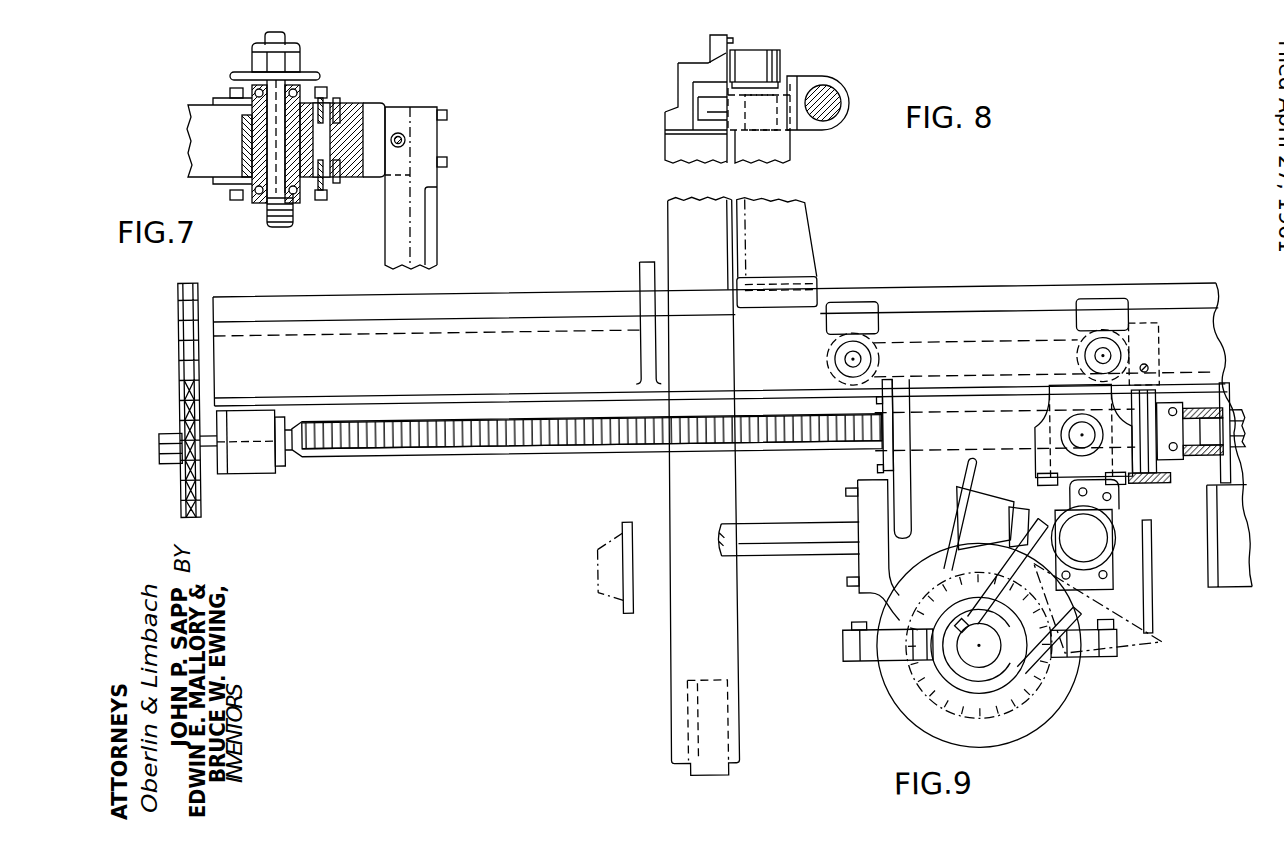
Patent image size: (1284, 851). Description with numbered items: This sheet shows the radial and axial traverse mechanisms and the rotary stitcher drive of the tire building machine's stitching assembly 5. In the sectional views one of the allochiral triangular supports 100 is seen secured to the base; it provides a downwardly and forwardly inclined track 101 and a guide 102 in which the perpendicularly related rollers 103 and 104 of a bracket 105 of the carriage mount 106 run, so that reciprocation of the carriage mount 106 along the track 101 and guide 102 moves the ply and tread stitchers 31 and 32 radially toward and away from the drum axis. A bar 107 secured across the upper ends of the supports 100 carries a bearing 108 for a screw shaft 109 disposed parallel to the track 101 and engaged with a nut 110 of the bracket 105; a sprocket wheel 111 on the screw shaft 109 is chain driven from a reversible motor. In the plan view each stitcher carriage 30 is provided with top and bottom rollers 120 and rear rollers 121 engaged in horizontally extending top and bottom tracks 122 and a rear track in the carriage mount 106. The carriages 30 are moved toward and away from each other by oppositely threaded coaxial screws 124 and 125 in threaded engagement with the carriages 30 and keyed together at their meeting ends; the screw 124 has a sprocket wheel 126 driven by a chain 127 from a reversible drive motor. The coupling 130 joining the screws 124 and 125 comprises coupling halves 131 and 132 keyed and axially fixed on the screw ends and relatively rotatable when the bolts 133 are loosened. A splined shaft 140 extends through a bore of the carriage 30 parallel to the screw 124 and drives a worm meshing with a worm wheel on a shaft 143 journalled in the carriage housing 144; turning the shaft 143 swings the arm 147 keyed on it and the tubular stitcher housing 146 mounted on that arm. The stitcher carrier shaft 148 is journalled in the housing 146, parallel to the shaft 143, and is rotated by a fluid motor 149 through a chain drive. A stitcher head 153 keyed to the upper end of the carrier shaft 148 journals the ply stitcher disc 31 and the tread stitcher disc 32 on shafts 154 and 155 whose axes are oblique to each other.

In FIG. 9, the carriage assembly 5 is at (1012, 283).
In FIG. 9, the stitcher carriage 30 is at (882, 505).
In FIG. 9, the ply stitcher disc 31 is at (975, 479).
In FIG. 9, the tread stitcher disc 32 is at (1148, 561).
In FIG. 7, the triangular support 100 is at (430, 225).
In FIG. 8, the triangular support 100 is at (707, 153).
In FIG. 9, the triangular support 100 is at (685, 660).
In FIG. 8, the track 101 is at (703, 133).
In FIG. 8, the guide 102 is at (727, 62).
In FIG. 8, the roller 103 is at (703, 107).
In FIG. 8, the roller 104 is at (777, 53).
In FIG. 8, the bracket 105 is at (770, 153).
In FIG. 9, the bracket 105 is at (806, 260).
In FIG. 9, the carriage mount 106 is at (938, 293).
In FIG. 7, the bar 107 is at (377, 108).
In FIG. 7, the bearing 108 is at (268, 150).
In FIG. 7, the screw shaft 109 is at (293, 220).
In FIG. 8, the screw shaft 109 is at (823, 112).
In FIG. 8, the nut 110 is at (840, 87).
In FIG. 7, the sprocket wheel 111 is at (318, 75).
In FIG. 9, the top and bottom rollers 120 is at (876, 362).
In FIG. 9, the rear roller 121 is at (867, 306).
In FIG. 9, the top and bottom tracks 122 is at (1021, 318).
In FIG. 9, the screw 124 is at (575, 458).
In FIG. 9, the screw 125 is at (1239, 422).
In FIG. 9, the sprocket wheel 126 is at (198, 493).
In FIG. 9, the chain 127 is at (182, 348).
In FIG. 9, the coupling 130 is at (1150, 506).
In FIG. 9, the coupling half 131 is at (1139, 463).
In FIG. 9, the coupling half 132 is at (1176, 418).
In FIG. 9, the bolt 133 is at (1160, 485).
In FIG. 9, the splined shaft 140 is at (807, 565).
In FIG. 9, the shaft 143 is at (971, 669).
In FIG. 9, the carriage housing 144 is at (915, 723).
In FIG. 9, the stitcher housing 146 is at (1158, 663).
In FIG. 9, the arm 147 is at (1083, 672).
In FIG. 9, the stitcher carrier shaft 148 is at (1101, 562).
In FIG. 9, the fluid motor 149 is at (1043, 449).
In FIG. 9, the stitcher head 153 is at (1124, 590).
In FIG. 9, the shaft 154 is at (1013, 534).
In FIG. 9, the shaft 155 is at (1121, 580).